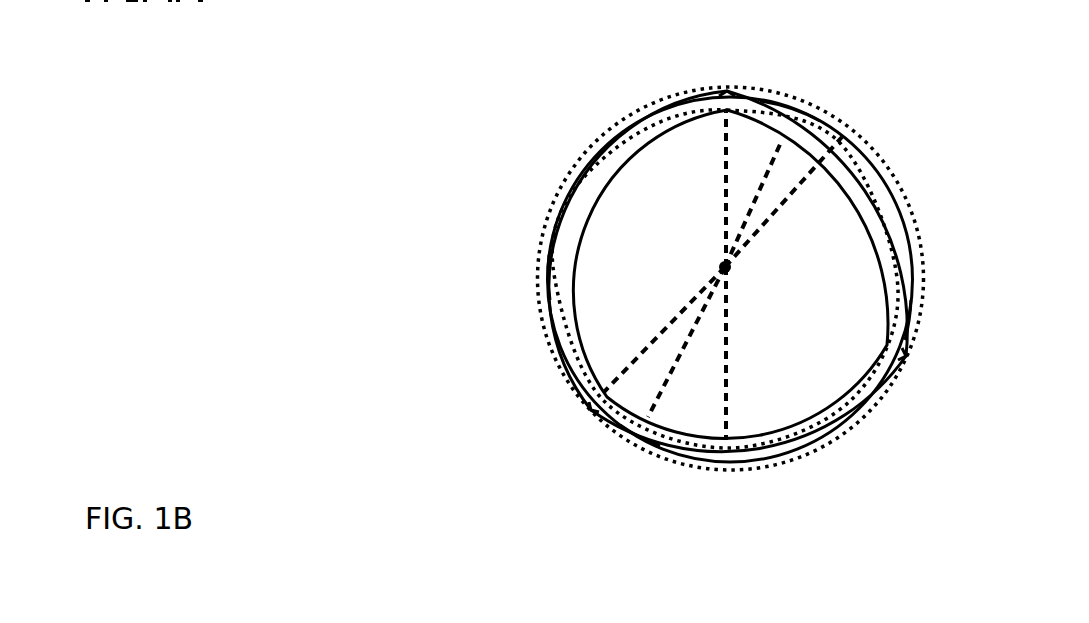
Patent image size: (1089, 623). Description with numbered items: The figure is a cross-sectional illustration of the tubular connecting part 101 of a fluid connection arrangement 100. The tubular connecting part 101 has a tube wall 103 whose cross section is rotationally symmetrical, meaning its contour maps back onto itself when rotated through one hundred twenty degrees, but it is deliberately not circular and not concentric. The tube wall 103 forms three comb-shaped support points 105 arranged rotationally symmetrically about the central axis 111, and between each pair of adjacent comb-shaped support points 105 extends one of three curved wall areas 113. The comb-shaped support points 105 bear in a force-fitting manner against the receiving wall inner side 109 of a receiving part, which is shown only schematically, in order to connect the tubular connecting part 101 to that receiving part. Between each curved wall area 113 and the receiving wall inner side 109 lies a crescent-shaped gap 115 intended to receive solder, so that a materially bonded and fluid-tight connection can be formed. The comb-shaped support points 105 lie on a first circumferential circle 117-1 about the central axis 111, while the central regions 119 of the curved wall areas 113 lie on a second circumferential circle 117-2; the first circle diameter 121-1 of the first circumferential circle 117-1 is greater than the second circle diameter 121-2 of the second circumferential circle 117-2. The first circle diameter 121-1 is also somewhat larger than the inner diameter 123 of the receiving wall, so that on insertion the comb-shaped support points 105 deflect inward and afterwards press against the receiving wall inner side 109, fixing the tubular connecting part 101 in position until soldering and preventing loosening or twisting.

The fluid connection arrangement 100 is at (589, 96).
The tubular connecting part 101 is at (720, 270).
The tube wall 103 is at (793, 107).
The comb-shaped support points 105 is at (727, 90).
The receiving wall inner side 109 is at (905, 205).
The central axis 111 is at (730, 270).
The curved wall areas 113 is at (577, 190).
The gap 115 is at (893, 180).
The first circumferential circle 117-1 is at (537, 270).
The second circumferential circle 117-2 is at (907, 322).
The central regions of the curved wall areas 119 is at (746, 317).
The first circle diameter 121-1 is at (690, 295).
The second circle diameter 121-2 is at (728, 385).
The inner diameter of the receiving wall 123 is at (638, 436).